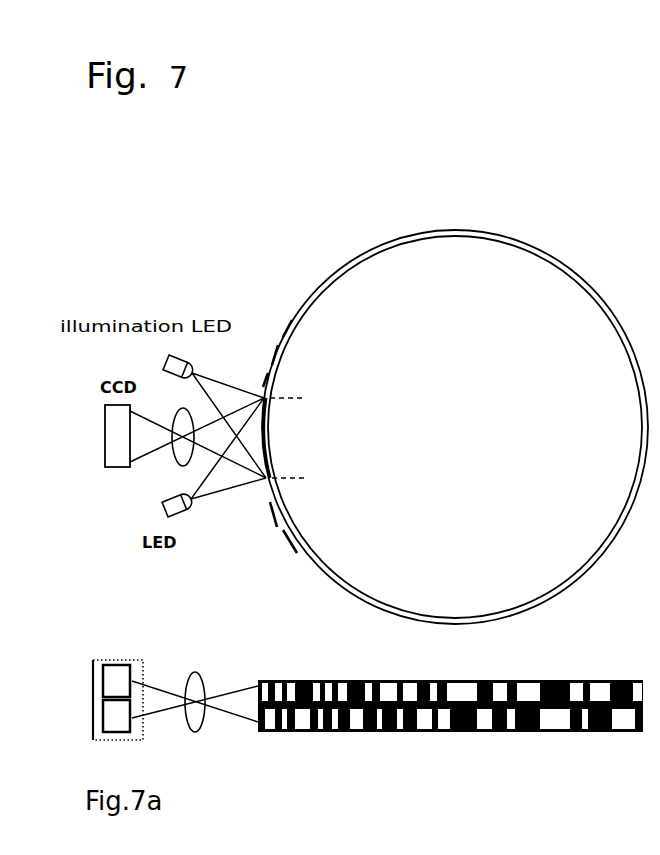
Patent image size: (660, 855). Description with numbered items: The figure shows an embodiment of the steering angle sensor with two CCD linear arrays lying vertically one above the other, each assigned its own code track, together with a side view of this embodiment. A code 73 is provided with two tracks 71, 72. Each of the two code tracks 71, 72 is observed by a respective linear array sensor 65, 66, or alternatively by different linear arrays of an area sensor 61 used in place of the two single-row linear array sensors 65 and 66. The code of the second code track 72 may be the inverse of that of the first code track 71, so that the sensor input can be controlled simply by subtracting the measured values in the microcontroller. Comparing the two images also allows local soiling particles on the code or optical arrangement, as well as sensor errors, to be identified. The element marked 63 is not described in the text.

In FIG. 7, the area sensor 61 is at (103, 458).
In FIG. 7A, the area sensor 61 is at (103, 652).
In FIG. 7, the reference marks on wheel 63 is at (284, 438).
In FIG. 7A, the linear array sensor 65 is at (109, 682).
In FIG. 7A, the linear array sensor 66 is at (109, 720).
In FIG. 7A, the code track 71 is at (208, 692).
In FIG. 7A, the code track 72 is at (195, 722).
In FIG. 7, the code 73 is at (272, 530).
In FIG. 7A, the code 73 is at (302, 673).